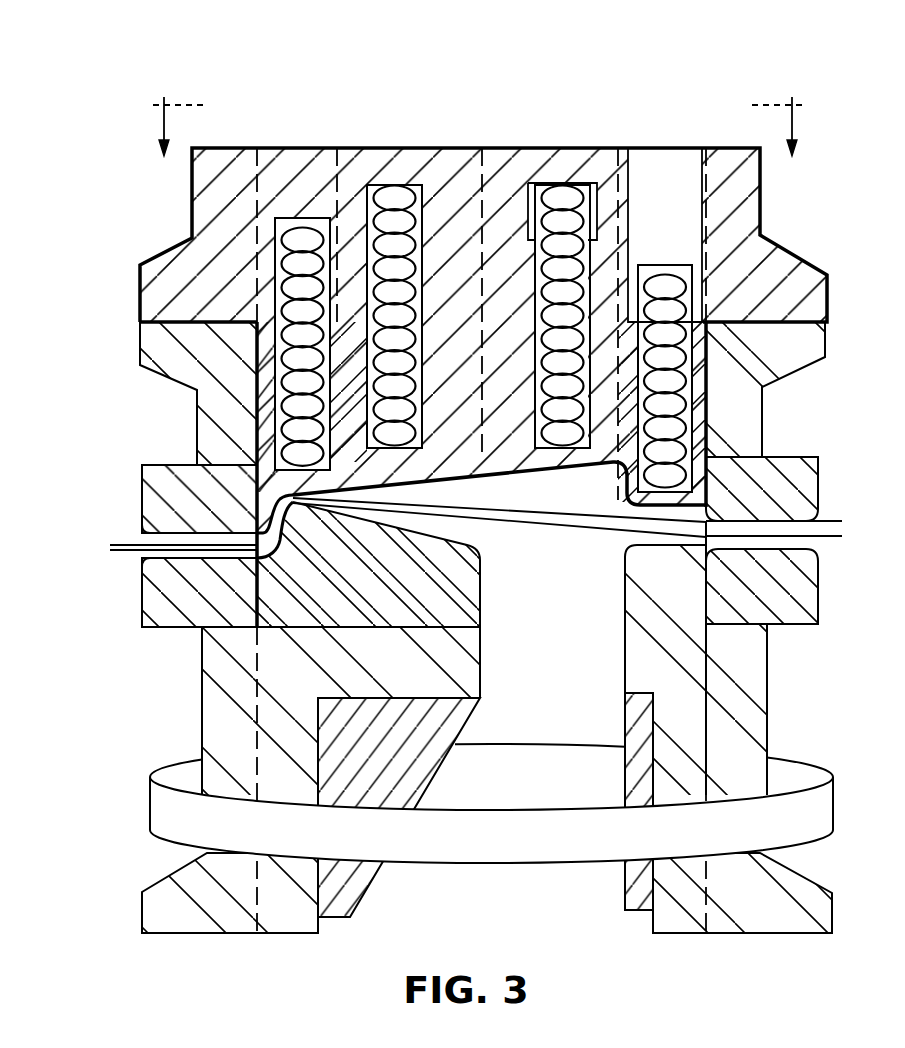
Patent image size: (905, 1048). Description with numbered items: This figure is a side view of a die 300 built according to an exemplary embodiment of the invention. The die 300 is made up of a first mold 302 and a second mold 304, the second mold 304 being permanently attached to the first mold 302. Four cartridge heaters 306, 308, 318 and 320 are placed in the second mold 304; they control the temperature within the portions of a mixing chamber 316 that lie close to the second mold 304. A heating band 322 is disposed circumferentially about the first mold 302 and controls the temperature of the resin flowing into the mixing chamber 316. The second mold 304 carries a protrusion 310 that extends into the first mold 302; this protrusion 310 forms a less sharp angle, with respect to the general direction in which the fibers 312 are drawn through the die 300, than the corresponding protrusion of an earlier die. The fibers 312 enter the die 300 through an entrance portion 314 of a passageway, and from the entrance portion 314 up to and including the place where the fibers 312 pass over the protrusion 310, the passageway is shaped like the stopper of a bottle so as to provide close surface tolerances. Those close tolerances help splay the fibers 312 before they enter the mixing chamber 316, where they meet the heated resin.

The die 300 is at (630, 83).
The first mold 302 is at (142, 915).
The second mold 304 is at (192, 189).
The cartridge heater 306 is at (574, 205).
The cartridge heater 308 is at (672, 300).
The protrusion 310 is at (257, 497).
The fibers 312 is at (118, 551).
The entrance portion 314 is at (224, 560).
The mixing chamber 316 is at (490, 530).
The cartridge heater 318 is at (396, 205).
The cartridge heater 320 is at (303, 228).
The heating band 322 is at (150, 805).